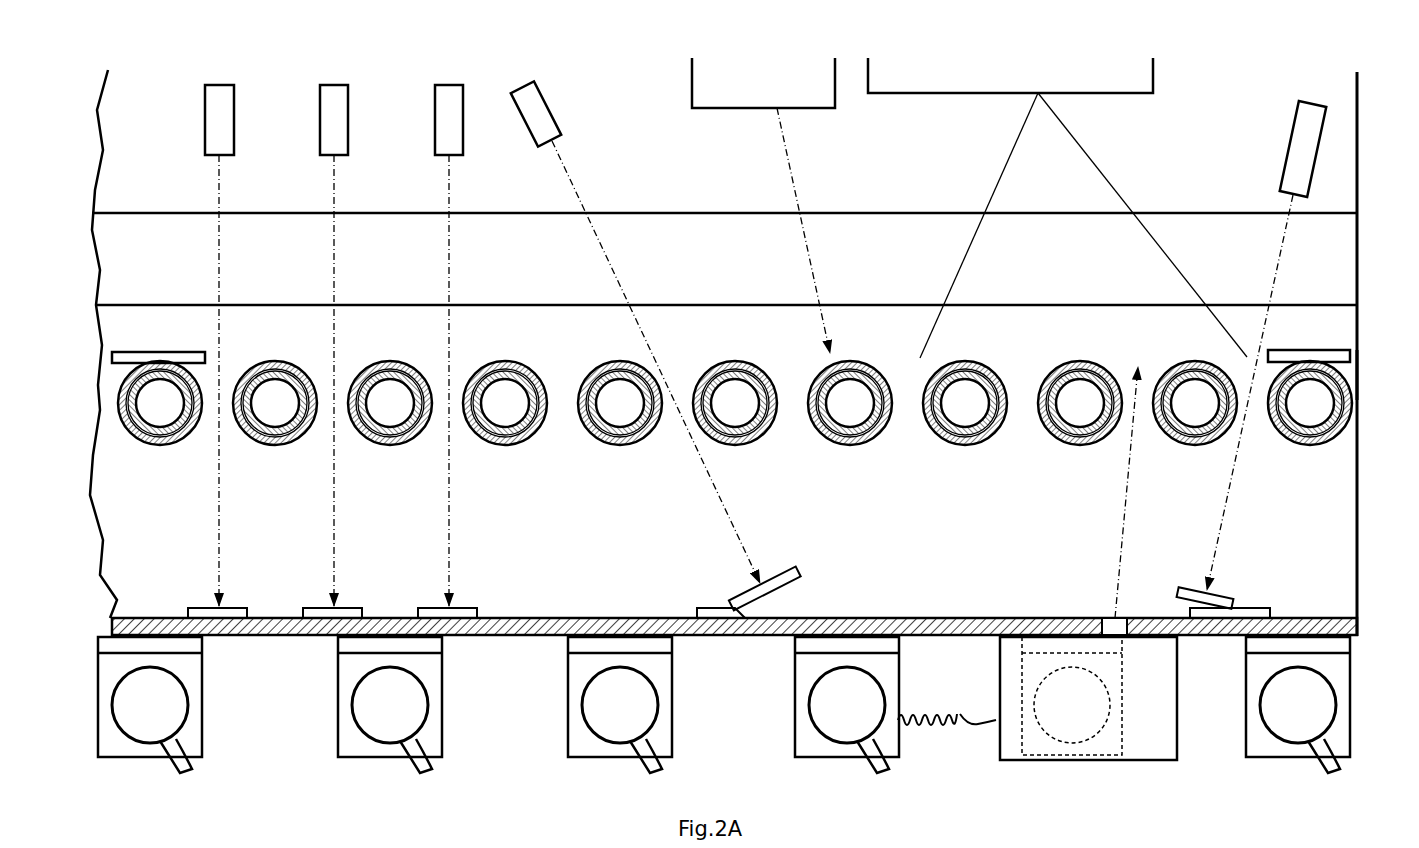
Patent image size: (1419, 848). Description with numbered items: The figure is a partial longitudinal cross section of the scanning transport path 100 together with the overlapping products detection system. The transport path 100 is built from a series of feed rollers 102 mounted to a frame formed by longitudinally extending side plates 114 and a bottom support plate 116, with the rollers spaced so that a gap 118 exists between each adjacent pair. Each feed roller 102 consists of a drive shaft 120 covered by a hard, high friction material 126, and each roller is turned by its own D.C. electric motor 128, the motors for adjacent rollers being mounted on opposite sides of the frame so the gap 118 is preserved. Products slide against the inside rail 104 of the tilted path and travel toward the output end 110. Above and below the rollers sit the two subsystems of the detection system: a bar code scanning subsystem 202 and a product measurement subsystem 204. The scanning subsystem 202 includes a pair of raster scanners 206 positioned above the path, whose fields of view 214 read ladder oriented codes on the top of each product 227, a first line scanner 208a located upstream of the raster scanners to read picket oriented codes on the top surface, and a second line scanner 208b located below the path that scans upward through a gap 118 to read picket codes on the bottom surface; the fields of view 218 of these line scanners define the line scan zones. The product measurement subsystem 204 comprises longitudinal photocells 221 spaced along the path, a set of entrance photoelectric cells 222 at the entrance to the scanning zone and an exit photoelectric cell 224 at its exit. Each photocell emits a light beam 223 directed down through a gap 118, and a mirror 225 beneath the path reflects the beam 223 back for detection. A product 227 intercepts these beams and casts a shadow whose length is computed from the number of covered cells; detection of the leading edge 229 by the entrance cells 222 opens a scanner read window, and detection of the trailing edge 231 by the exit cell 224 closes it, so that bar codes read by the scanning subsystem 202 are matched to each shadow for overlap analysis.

The transport path 100 is at (85, 392).
The feed rollers 102 is at (735, 408).
The inside rail 104 is at (1320, 318).
The output end 110 is at (1366, 366).
The side plates 114 is at (1327, 506).
The bottom support plate 116 is at (1357, 628).
The gap 118 is at (560, 397).
The drive shaft 120 is at (730, 408).
The high friction material 126 is at (404, 370).
The electric motor 128 is at (440, 719).
The bar code scanning subsystem 202 is at (1175, 83).
The product measurement subsystem 204 is at (316, 68).
The raster scanners 206 is at (1099, 93).
The first line scanner 208a is at (699, 108).
The second line scanner 208b is at (947, 701).
The fields of view 214 is at (1095, 170).
The fields of view 218 is at (790, 175).
The longitudinal photocells 221 is at (205, 118).
The entrance photoelectric cells 222 is at (558, 104).
The light beam 223 is at (222, 473).
The exit photoelectric cell 224 is at (1305, 104).
The mirror 225 is at (244, 606).
The product 227 is at (155, 349).
The leading edge 229 is at (213, 355).
The trailing edge 231 is at (1260, 350).